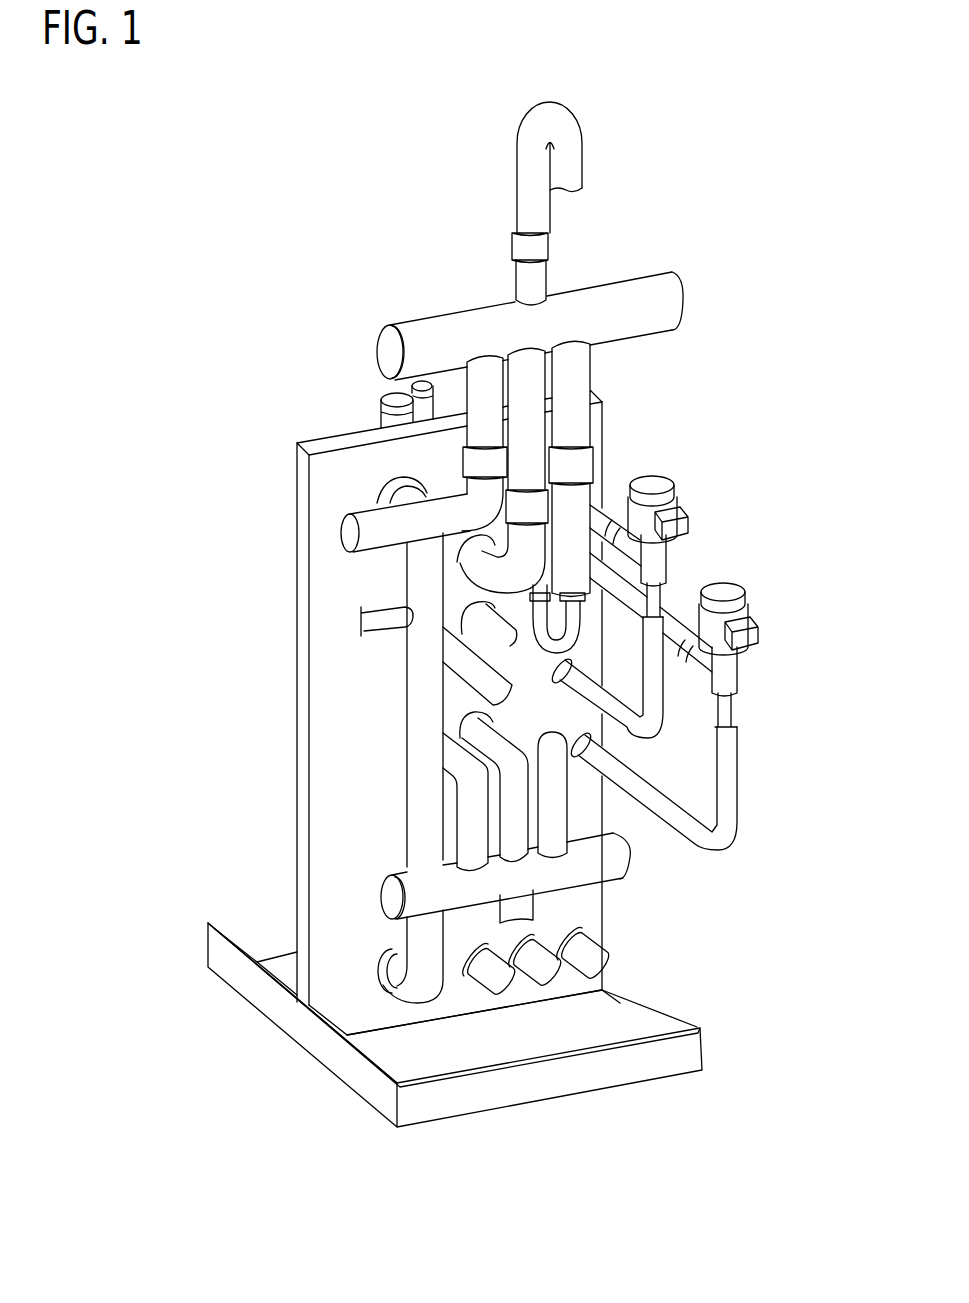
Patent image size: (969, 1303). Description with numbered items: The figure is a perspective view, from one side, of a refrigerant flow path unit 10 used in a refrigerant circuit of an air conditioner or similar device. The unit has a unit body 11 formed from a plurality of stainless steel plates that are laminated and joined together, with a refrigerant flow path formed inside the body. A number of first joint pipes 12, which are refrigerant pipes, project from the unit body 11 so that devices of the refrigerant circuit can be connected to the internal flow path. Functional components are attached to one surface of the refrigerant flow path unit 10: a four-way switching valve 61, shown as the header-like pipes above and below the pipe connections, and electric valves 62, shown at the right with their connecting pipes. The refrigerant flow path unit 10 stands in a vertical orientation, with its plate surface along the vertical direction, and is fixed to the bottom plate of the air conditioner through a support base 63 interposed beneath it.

The refrigerant flow path unit 10 is at (246, 416).
The unit body 11 is at (318, 602).
The first joint pipe 12 is at (382, 489).
The four-way switching valve 61 is at (641, 275).
The electric valve 62 is at (679, 448).
The support base 63 is at (343, 1055).